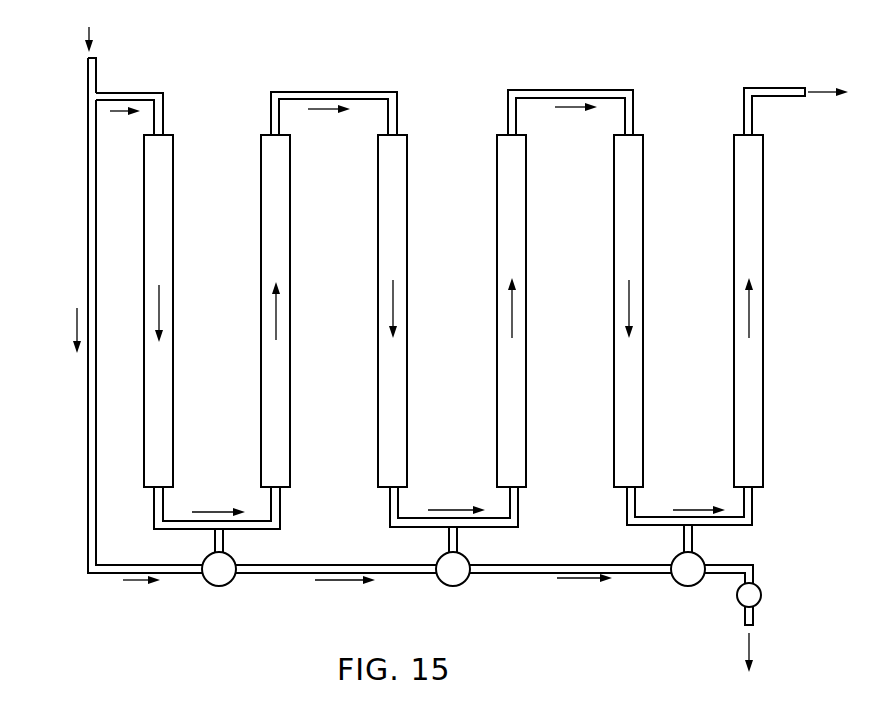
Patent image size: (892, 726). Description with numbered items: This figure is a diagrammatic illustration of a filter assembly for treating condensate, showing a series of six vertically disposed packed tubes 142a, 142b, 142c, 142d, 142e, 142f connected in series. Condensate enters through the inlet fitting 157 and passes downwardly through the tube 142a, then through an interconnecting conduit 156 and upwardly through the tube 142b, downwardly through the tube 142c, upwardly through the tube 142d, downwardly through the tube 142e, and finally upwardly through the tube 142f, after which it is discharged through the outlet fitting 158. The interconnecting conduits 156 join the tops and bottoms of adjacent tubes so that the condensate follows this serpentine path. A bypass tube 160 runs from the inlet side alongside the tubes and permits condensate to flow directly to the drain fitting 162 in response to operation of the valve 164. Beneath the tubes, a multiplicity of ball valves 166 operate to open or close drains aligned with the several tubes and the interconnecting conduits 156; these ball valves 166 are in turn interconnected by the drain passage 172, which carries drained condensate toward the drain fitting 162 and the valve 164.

The packed tube 142a is at (173, 215).
The packed tube 142b is at (290, 205).
The packed tube 142c is at (407, 195).
The packed tube 142d is at (526, 190).
The packed tube 142e is at (643, 188).
The packed tube 142f is at (763, 178).
The interconnecting conduits 156 is at (327, 92).
The inlet fitting 157 is at (87, 71).
The outlet fitting 158 is at (775, 88).
The bypass tube 160 is at (88, 240).
The drain fitting 162 is at (753, 575).
The valve 164 is at (761, 595).
The ball valves 166 is at (212, 587).
The drain passage 172 is at (266, 574).